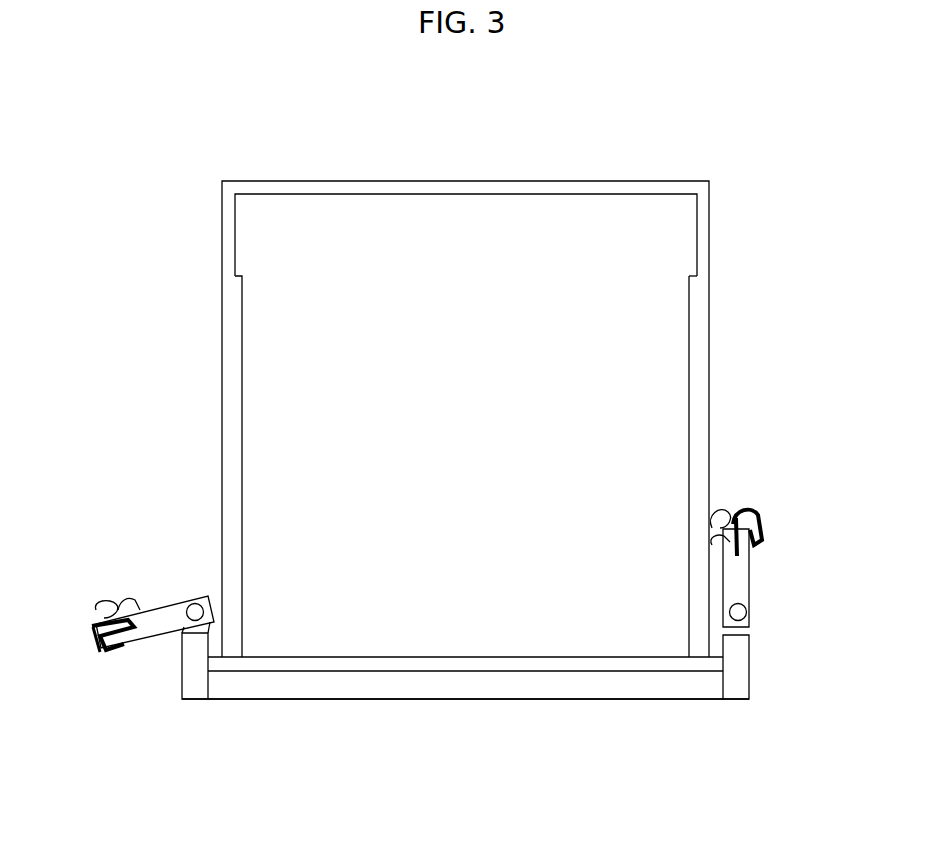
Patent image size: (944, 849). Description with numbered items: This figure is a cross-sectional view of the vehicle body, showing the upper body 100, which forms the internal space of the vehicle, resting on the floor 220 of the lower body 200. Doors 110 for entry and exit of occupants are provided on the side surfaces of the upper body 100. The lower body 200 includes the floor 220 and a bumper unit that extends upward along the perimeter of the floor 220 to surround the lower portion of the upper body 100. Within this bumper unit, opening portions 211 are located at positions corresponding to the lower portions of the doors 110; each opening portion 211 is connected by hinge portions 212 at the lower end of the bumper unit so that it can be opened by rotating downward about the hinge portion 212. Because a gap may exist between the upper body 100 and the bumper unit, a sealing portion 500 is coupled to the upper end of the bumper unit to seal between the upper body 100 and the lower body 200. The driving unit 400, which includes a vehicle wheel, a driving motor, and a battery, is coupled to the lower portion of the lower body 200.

The upper body 100 is at (377, 168).
The door 110 is at (222, 335).
The lower body 200 is at (480, 661).
The opening portion 211 is at (158, 612).
The hinge portion 212 is at (190, 612).
The floor 220 is at (557, 662).
The driving unit 400 is at (396, 710).
The sealing portion 500 is at (98, 607).